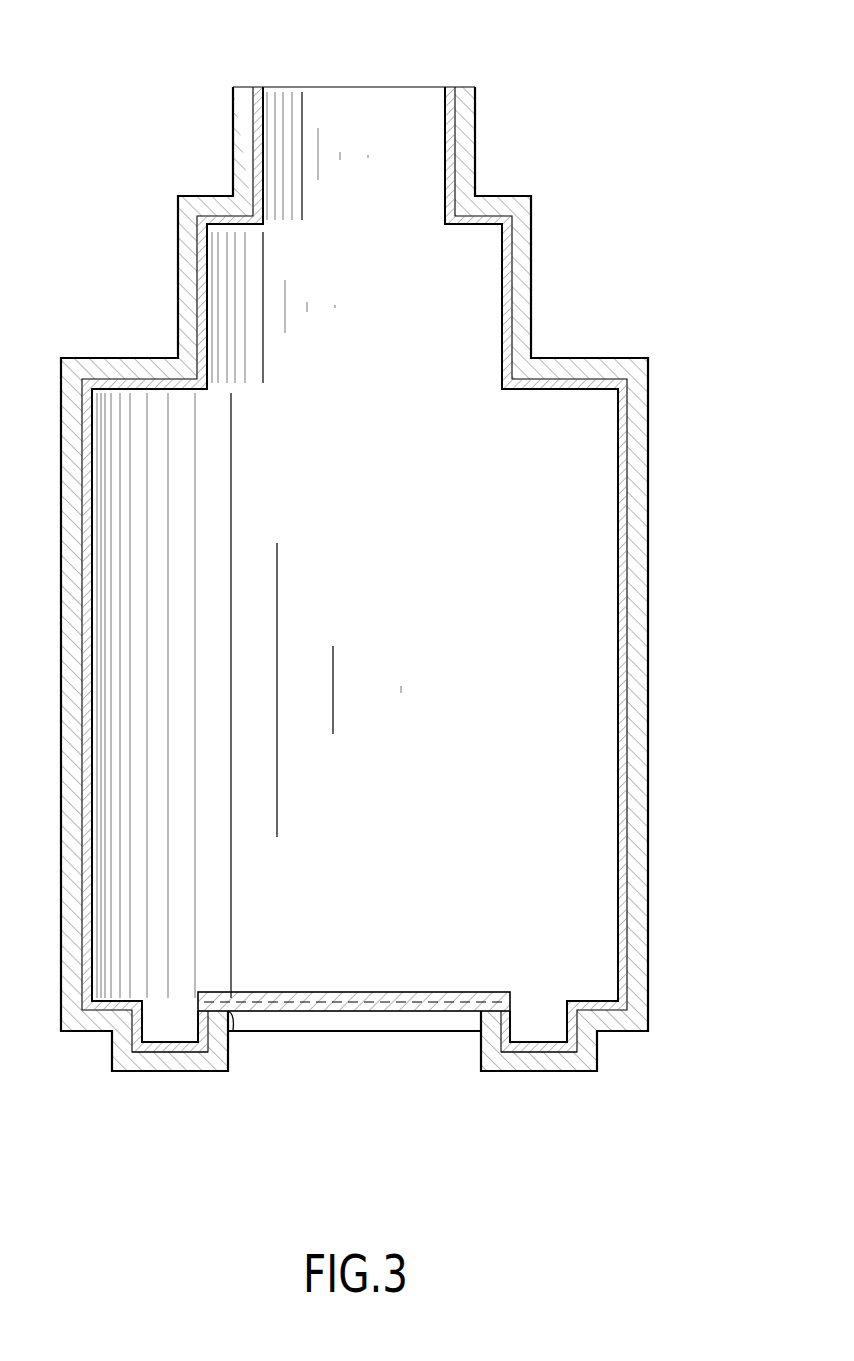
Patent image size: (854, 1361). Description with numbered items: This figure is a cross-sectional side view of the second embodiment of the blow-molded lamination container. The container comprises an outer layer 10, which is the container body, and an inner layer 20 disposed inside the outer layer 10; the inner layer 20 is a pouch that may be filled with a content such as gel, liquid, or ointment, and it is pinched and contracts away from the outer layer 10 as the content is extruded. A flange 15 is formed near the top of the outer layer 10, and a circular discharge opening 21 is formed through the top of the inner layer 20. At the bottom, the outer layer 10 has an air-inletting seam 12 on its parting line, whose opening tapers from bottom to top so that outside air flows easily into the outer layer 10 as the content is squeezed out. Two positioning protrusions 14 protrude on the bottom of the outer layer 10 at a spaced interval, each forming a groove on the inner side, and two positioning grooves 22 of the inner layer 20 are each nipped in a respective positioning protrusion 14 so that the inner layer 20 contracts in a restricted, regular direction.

The outer layer 10 is at (654, 582).
The air-inletting seam 12 is at (343, 1011).
The positioning protrusions 14 is at (198, 1047).
The flange 15 is at (503, 196).
The inner layer 20 is at (612, 846).
The circular discharge opening 21 is at (445, 115).
The positioning grooves 22 is at (159, 1046).